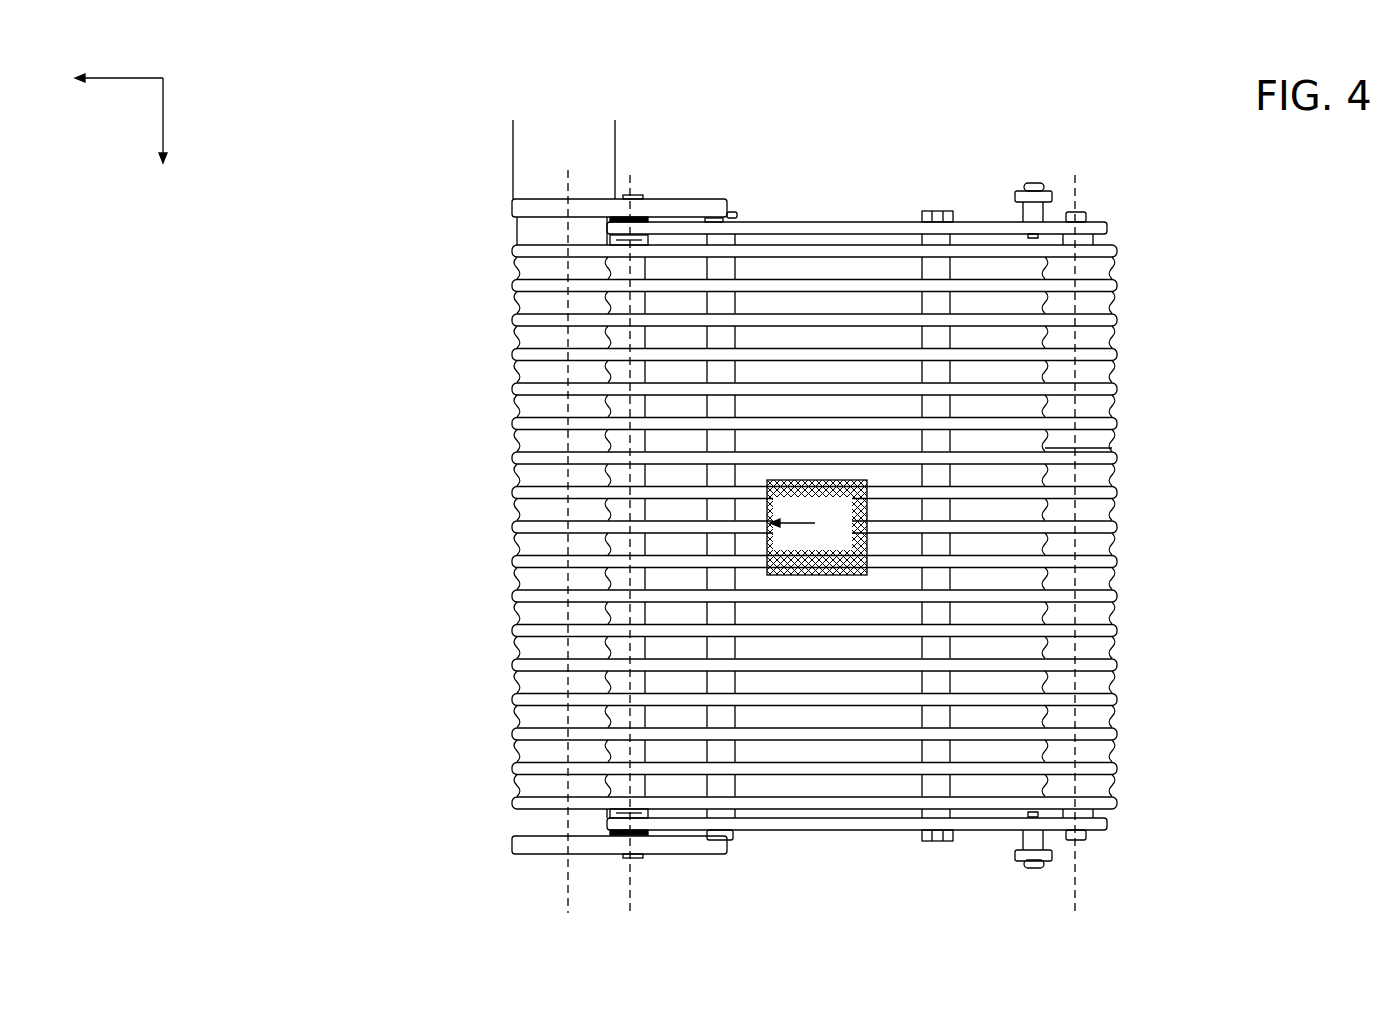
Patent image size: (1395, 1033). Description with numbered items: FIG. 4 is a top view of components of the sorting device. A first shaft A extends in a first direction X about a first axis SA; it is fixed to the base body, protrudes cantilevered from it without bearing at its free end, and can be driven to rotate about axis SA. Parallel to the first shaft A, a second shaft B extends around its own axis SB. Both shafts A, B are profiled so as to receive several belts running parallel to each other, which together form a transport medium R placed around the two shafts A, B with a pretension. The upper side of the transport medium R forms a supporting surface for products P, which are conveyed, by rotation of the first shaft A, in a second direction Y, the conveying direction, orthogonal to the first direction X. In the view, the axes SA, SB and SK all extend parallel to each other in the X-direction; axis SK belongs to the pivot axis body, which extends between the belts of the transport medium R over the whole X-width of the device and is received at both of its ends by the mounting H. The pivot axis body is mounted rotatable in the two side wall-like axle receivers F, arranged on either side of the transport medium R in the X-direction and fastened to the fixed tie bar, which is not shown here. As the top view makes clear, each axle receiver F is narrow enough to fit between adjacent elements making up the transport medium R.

The axle receiver F is at (542, 202).
The first shaft A is at (530, 300).
The mounting H is at (770, 235).
The transport medium R is at (840, 275).
The second shaft B is at (1088, 337).
The product P is at (817, 527).
The first axis SA is at (562, 877).
The pivot axis SK is at (633, 900).
The second axis SB is at (1078, 872).
The first direction X is at (181, 131).
The second direction Y is at (119, 52).